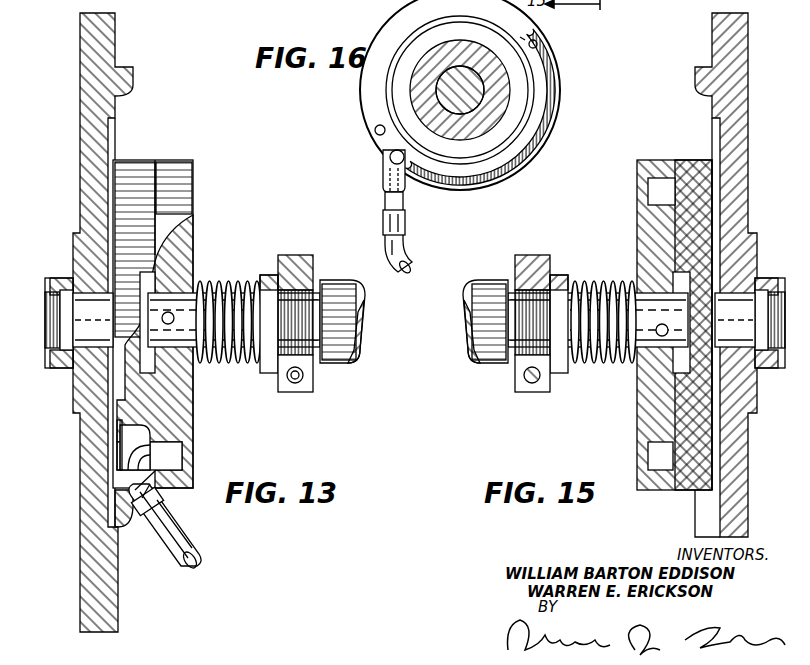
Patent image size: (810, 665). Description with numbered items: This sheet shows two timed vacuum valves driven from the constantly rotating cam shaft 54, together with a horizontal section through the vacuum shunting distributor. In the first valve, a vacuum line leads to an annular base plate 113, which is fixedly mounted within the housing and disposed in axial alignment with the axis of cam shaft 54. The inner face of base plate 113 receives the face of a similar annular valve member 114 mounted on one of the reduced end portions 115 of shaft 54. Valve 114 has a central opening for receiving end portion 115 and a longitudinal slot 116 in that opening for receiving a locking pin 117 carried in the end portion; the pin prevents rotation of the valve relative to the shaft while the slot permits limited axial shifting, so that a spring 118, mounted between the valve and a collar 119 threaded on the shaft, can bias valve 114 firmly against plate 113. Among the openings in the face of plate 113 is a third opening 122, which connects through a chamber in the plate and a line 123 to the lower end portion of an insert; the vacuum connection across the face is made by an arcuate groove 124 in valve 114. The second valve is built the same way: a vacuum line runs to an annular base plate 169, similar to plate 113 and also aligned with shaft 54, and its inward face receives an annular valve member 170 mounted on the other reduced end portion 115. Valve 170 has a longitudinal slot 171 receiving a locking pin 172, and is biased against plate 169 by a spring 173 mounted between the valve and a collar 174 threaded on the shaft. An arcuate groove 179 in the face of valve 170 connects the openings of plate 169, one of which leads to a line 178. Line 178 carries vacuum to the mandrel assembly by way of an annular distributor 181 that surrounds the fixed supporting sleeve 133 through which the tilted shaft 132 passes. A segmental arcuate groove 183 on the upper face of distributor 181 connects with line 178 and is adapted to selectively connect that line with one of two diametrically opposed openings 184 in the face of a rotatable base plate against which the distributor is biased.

In FIG. 13, the cam shaft 54 is at (340, 363).
In FIG. 15, the cam shaft 54 is at (490, 365).
In FIG. 13, the annular base plate 113 is at (142, 160).
In FIG. 13, the annular valve member 114 is at (190, 230).
In FIG. 13, the reduced end portion 115 is at (232, 352).
In FIG. 15, the reduced end portion 115 is at (606, 356).
In FIG. 13, the longitudinal slot 116 is at (195, 362).
In FIG. 13, the locking pin 117 is at (171, 312).
In FIG. 13, the spring 118 is at (223, 285).
In FIG. 13, the collar 119 is at (270, 372).
In FIG. 13, the third opening 122 is at (153, 470).
In FIG. 13, the line 123 is at (198, 545).
In FIG. 13, the arcuate groove 124 is at (180, 455).
In FIG. 16, the shaft 132 is at (468, 75).
In FIG. 16, the fixed supporting sleeve 133 is at (415, 90).
In FIG. 15, the annular base plate 169 is at (688, 162).
In FIG. 15, the annular valve member 170 is at (640, 170).
In FIG. 15, the longitudinal slot 171 is at (648, 272).
In FIG. 15, the locking pin 172 is at (660, 336).
In FIG. 15, the spring 173 is at (603, 288).
In FIG. 15, the collar 174 is at (552, 380).
In FIG. 16, the line 178 is at (410, 250).
In FIG. 15, the arcuate groove 179 is at (655, 203).
In FIG. 16, the annular distributor 181 is at (530, 30).
In FIG. 16, the segmental arcuate groove 183 is at (553, 93).
In FIG. 16, the openings 184 is at (374, 130).